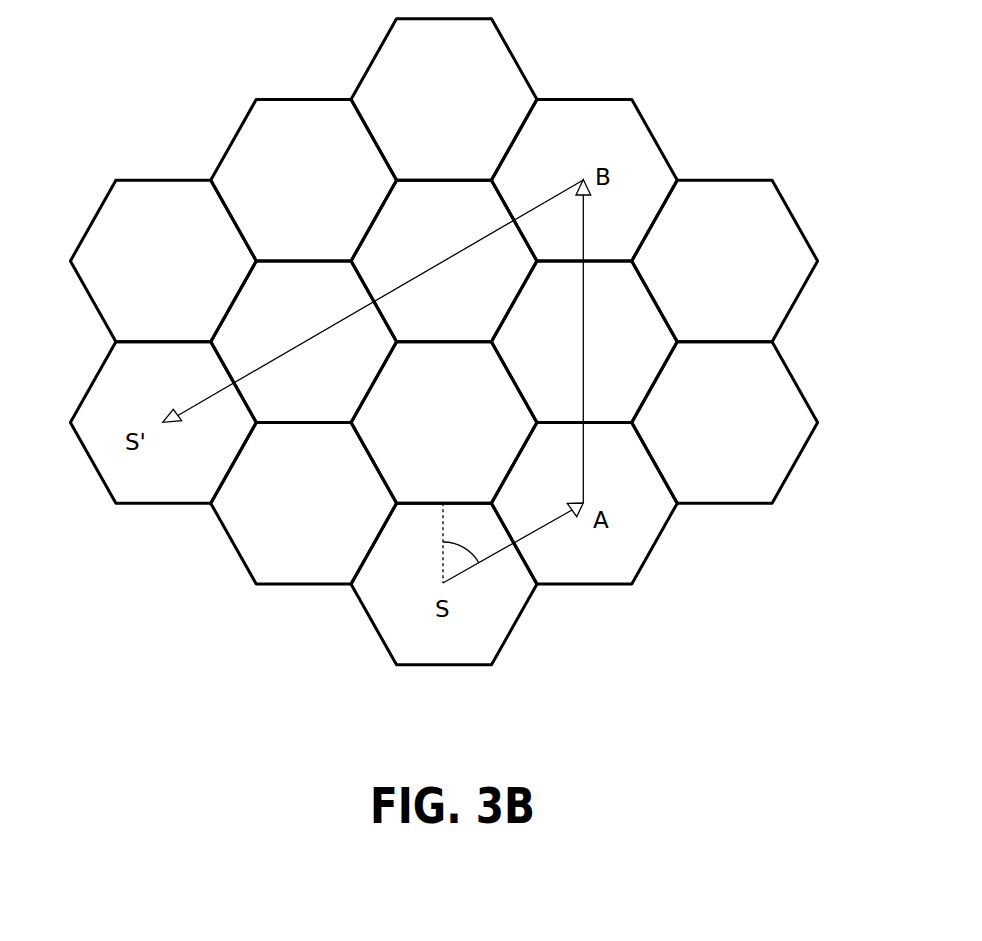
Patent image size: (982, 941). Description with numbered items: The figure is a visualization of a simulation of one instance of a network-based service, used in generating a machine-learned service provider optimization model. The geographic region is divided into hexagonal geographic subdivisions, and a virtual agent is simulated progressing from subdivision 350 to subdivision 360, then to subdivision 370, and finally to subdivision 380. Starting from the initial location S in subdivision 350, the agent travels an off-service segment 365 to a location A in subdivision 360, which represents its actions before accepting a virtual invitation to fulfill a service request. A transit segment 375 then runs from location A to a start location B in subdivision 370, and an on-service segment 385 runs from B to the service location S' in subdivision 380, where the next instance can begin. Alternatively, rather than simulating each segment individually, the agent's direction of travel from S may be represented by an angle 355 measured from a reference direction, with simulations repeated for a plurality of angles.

The subdivision 350 is at (513, 625).
The angle 355 is at (453, 563).
The subdivision 360 is at (657, 547).
The off-service segment 365 is at (520, 537).
The subdivision 370 is at (652, 132).
The transit segment 375 is at (585, 377).
The subdivision 380 is at (97, 377).
The on-service segment 385 is at (443, 261).